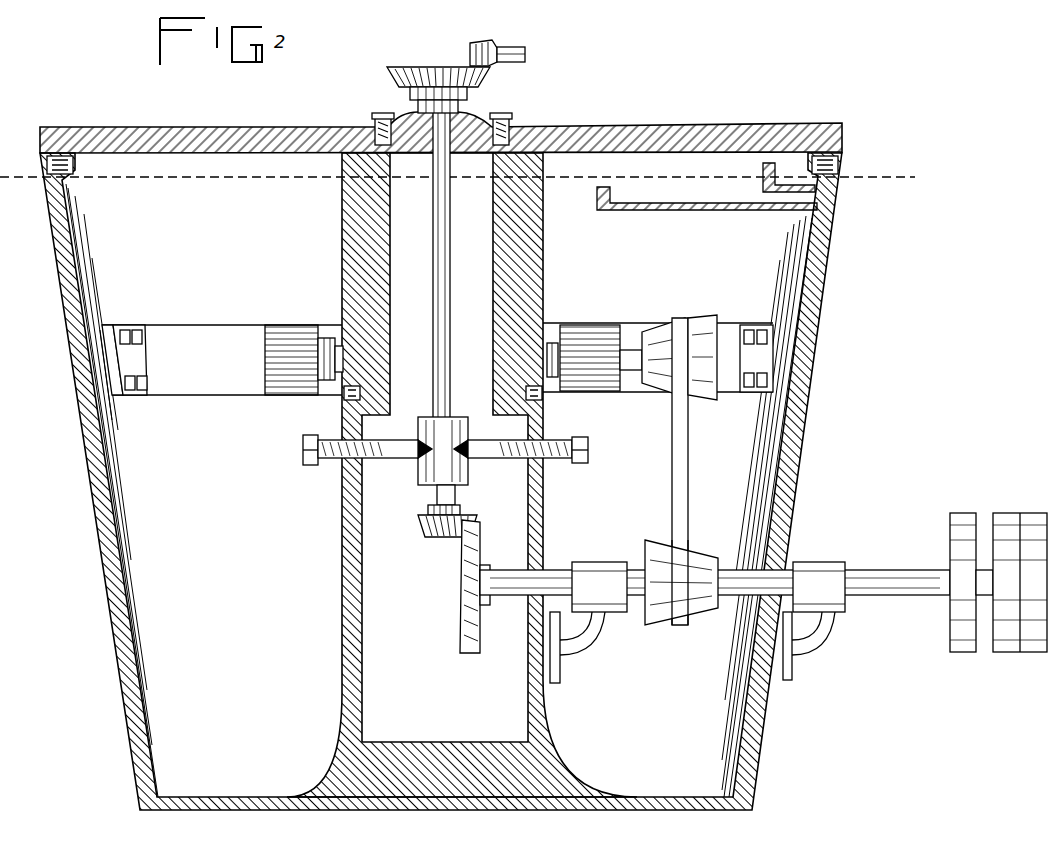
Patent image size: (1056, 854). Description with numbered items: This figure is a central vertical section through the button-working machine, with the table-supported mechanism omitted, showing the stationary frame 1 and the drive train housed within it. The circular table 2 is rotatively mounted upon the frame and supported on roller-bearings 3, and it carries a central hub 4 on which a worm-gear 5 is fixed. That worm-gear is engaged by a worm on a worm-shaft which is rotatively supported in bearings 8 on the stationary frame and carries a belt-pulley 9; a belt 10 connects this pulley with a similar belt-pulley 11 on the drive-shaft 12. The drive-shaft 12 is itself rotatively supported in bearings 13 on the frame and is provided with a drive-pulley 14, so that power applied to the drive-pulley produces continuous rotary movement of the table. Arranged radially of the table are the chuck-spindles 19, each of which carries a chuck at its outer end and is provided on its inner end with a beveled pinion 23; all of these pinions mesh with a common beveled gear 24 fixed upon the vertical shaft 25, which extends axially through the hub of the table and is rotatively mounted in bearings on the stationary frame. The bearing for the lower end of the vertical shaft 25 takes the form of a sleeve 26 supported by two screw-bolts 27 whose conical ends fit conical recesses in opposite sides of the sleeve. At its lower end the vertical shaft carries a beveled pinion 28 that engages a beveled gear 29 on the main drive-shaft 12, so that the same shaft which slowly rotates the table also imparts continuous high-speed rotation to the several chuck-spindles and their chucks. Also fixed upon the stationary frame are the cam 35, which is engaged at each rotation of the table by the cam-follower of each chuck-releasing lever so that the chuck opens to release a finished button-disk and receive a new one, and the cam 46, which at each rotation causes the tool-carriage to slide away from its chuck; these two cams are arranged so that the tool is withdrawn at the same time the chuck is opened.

The stationary frame 1 is at (88, 492).
The circular table 2 is at (441, 124).
The roller-bearings 3 is at (46, 162).
The hub 4 is at (342, 235).
The worm-gear 5 is at (327, 338).
The bearings 8 is at (288, 325).
The belt-pulley 9 is at (704, 318).
The belt 10 is at (679, 318).
The belt-pulley 11 is at (662, 625).
The drive-shaft 12 is at (905, 570).
The bearings 13 is at (601, 562).
The drive-pulley 14 is at (1004, 513).
The spindle 19 is at (516, 47).
The beveled pinion 23 is at (482, 43).
The beveled gear 24 is at (428, 66).
The vertical shaft 25 is at (429, 259).
The sleeve 26 is at (428, 480).
The screw-bolts 27 is at (320, 466).
The beveled pinion 28 is at (428, 540).
The beveled gear 29 is at (462, 587).
The cam 35 is at (611, 195).
The cam 46 is at (763, 188).